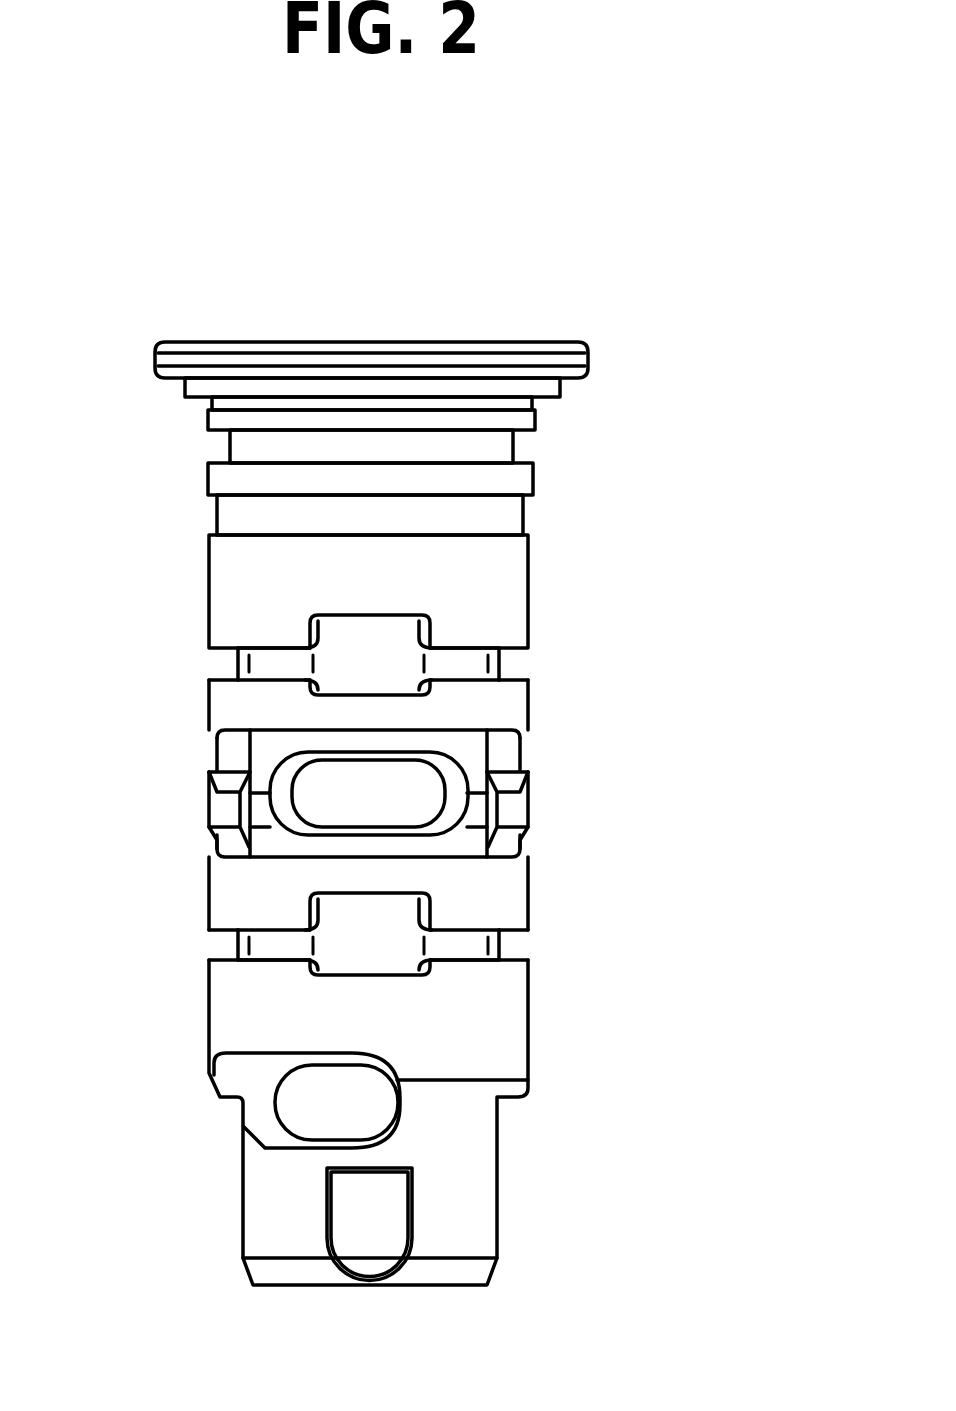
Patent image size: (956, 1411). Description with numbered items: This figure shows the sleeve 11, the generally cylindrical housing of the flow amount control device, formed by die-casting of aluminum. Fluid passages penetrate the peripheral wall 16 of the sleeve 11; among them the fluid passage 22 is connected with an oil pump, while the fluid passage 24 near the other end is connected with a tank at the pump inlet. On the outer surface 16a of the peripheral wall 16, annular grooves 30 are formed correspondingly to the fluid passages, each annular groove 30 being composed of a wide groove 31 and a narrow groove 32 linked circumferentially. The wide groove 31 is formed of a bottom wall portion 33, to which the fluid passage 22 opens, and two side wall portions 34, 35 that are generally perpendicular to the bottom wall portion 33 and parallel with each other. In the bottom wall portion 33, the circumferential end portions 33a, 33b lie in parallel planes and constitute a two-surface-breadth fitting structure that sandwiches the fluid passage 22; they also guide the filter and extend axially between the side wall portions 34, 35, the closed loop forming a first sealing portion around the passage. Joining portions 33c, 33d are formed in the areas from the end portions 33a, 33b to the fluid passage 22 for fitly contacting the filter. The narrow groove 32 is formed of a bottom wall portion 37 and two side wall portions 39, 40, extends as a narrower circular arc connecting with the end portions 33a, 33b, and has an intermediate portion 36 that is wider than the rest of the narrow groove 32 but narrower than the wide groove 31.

The sleeve 11 is at (498, 330).
The peripheral wall 16 is at (233, 555).
The outer surface 16a is at (508, 1055).
The fluid passage 22 is at (400, 820).
The fluid passage 24 is at (298, 1122).
The annular groove 30 is at (222, 650).
The wide groove 31 is at (300, 742).
The narrow groove 32 is at (447, 653).
The bottom wall portion 33 is at (468, 840).
The circumferential end portion 33a is at (248, 752).
The circumferential end portion 33b is at (490, 747).
The joining portion 33c is at (262, 809).
The joining portion 33d is at (477, 810).
The side wall portion 34 is at (297, 845).
The side wall portion 35 is at (478, 735).
The intermediate portion 36 is at (365, 635).
The bottom wall portion 37 is at (273, 657).
The side wall portion 39 is at (505, 664).
The side wall portion 40 is at (237, 662).